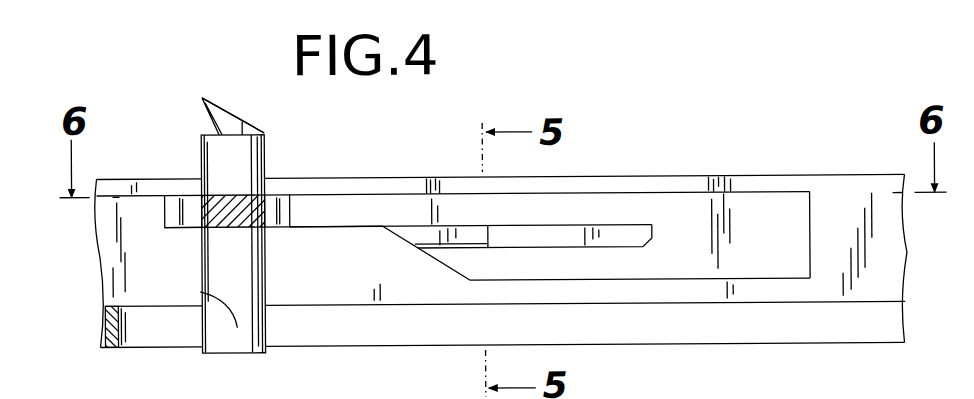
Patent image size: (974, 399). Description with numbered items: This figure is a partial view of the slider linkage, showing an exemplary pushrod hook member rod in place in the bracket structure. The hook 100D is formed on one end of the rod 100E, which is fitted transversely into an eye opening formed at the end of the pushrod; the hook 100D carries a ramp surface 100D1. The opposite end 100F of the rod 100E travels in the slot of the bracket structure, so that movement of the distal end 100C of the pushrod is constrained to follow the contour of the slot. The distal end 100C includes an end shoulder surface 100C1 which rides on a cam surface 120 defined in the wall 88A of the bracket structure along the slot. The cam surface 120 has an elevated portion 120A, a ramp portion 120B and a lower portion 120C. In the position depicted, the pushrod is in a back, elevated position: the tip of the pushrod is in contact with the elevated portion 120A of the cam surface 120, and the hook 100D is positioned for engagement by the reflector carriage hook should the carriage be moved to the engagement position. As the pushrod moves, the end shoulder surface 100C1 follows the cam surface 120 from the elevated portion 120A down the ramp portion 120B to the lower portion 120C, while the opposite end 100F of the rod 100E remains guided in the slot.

The wall 88A is at (667, 178).
The cam surface 120 is at (345, 202).
The elevated portion 120A is at (309, 226).
The ramp portion 120B is at (446, 258).
The lower portion 120C is at (592, 272).
The distal end 100C is at (186, 195).
The end shoulder surface 100C1 is at (191, 232).
The rod 100E is at (230, 262).
The opposite end 100F is at (200, 290).
The hook 100D is at (210, 90).
The ramp surface 100D1 is at (221, 106).